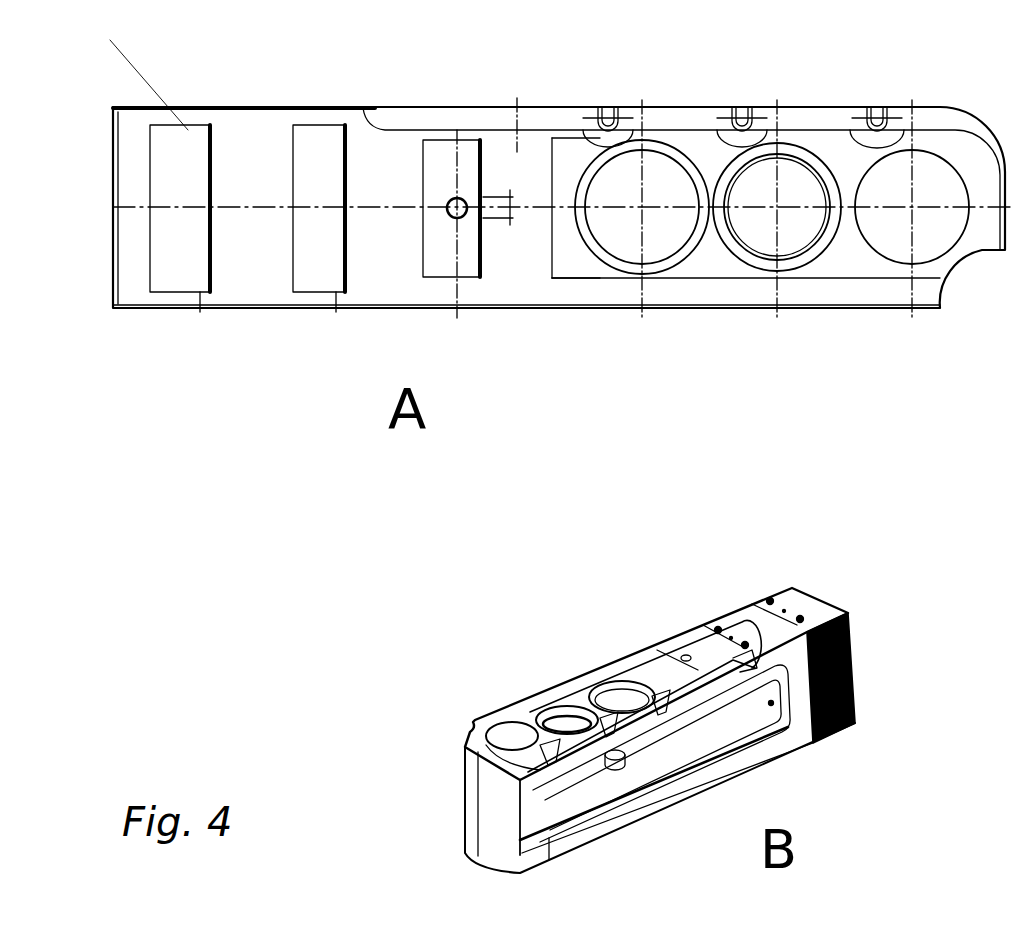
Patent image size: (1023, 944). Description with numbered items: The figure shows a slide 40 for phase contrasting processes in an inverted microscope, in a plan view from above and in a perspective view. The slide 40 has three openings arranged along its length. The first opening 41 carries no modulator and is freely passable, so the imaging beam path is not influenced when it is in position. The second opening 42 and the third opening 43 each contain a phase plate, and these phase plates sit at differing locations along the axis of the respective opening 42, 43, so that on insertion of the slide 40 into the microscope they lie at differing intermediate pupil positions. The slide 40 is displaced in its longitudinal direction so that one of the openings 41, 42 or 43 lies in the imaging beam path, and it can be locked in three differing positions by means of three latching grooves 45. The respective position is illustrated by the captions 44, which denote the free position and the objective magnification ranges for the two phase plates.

The slide 40 is at (731, 338).
The first opening 41 is at (927, 177).
The second opening 42 is at (783, 177).
The third opening 43 is at (653, 177).
The captions 44 is at (188, 128).
The latching grooves 45 is at (603, 106).